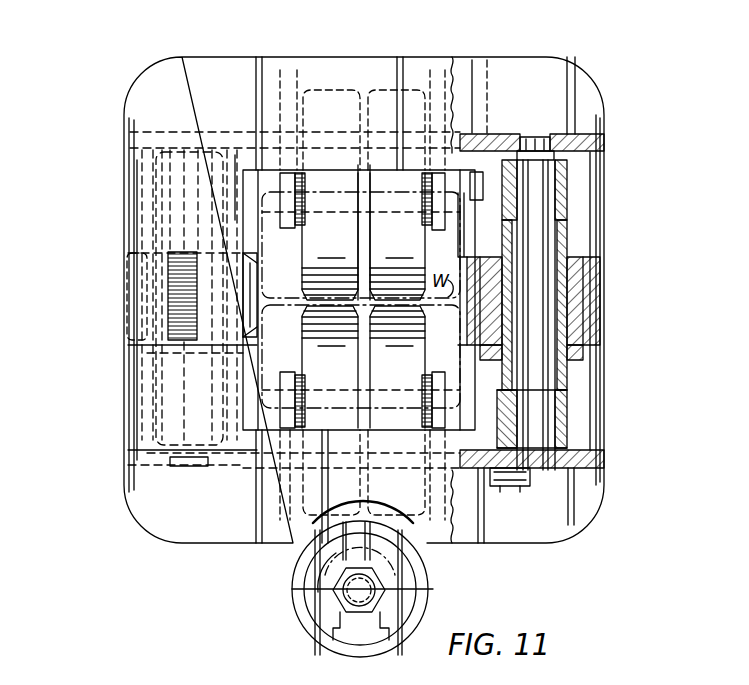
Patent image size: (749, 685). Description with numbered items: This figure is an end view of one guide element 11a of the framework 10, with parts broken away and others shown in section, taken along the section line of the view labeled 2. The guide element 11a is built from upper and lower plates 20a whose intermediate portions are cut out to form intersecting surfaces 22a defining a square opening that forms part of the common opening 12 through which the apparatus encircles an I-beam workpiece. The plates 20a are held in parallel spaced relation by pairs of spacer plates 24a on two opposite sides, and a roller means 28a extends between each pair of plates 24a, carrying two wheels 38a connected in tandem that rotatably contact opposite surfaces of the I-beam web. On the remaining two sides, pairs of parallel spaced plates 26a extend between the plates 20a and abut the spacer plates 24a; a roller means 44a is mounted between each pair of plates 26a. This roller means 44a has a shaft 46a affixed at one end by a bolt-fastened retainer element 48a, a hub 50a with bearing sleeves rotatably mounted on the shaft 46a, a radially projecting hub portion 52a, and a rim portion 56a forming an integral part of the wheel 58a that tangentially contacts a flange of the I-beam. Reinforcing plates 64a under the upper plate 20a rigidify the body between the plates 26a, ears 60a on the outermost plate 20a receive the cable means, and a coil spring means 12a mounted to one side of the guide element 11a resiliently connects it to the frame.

The upper and lower plates 20a is at (197, 75).
The intersecting surfaces 22a is at (419, 176).
The spacer plates 24a is at (288, 70).
The parallel spaced plates 26a is at (143, 137).
The roller means 28a is at (382, 93).
The wheels 38a is at (348, 245).
The roller means 44a is at (604, 287).
The shaft 46a is at (535, 138).
The bolt-fastened retainer element 48a is at (525, 480).
The hub 50a is at (560, 380).
The radially projecting hub portion 52a is at (570, 365).
The rim portion 56a is at (573, 270).
The wheel 58a is at (600, 308).
The ears 60a is at (175, 300).
The reinforcing plates 64a is at (200, 413).
The guide element 11a is at (233, 520).
The coil spring means 12a is at (319, 647).
The common opening 12 is at (479, 208).
The framework 10 is at (257, 373).
The section line 2- 2 is at (20, 600).